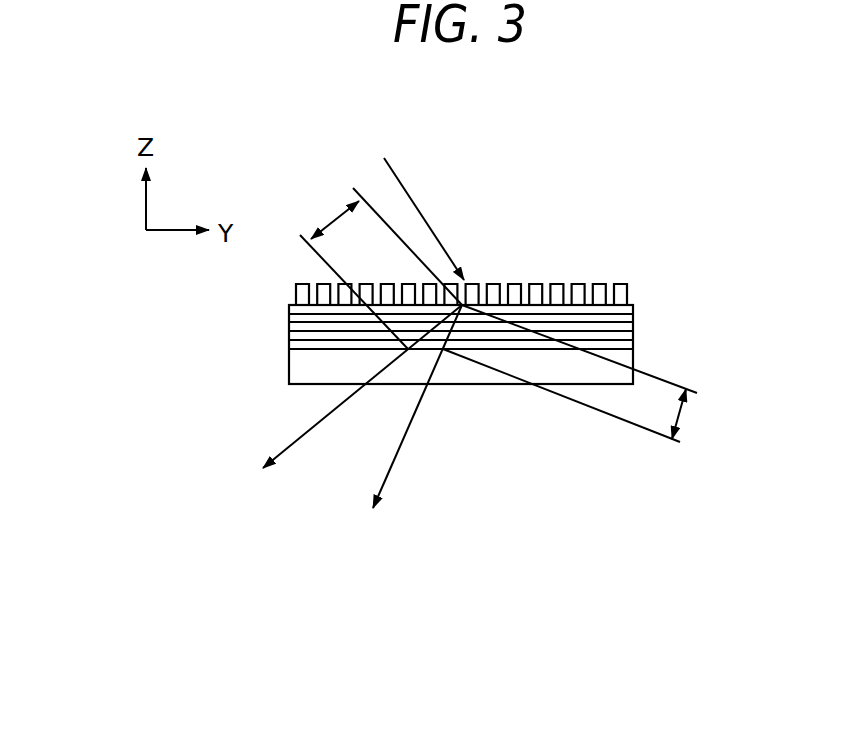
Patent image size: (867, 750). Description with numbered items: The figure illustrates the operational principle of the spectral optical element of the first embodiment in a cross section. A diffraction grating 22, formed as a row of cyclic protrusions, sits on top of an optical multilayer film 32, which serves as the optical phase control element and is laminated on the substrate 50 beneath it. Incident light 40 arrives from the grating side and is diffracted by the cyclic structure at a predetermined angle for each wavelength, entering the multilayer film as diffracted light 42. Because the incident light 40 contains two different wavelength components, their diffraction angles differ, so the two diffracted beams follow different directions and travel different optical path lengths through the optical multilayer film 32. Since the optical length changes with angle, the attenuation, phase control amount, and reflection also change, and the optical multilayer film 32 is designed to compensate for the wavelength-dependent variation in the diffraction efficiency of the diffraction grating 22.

The diffraction grating 22 is at (618, 284).
The optical multilayer film 32 is at (633, 320).
The incident light 40 is at (419, 208).
The diffracted light 42 is at (337, 407).
The substrate 50 is at (289, 366).